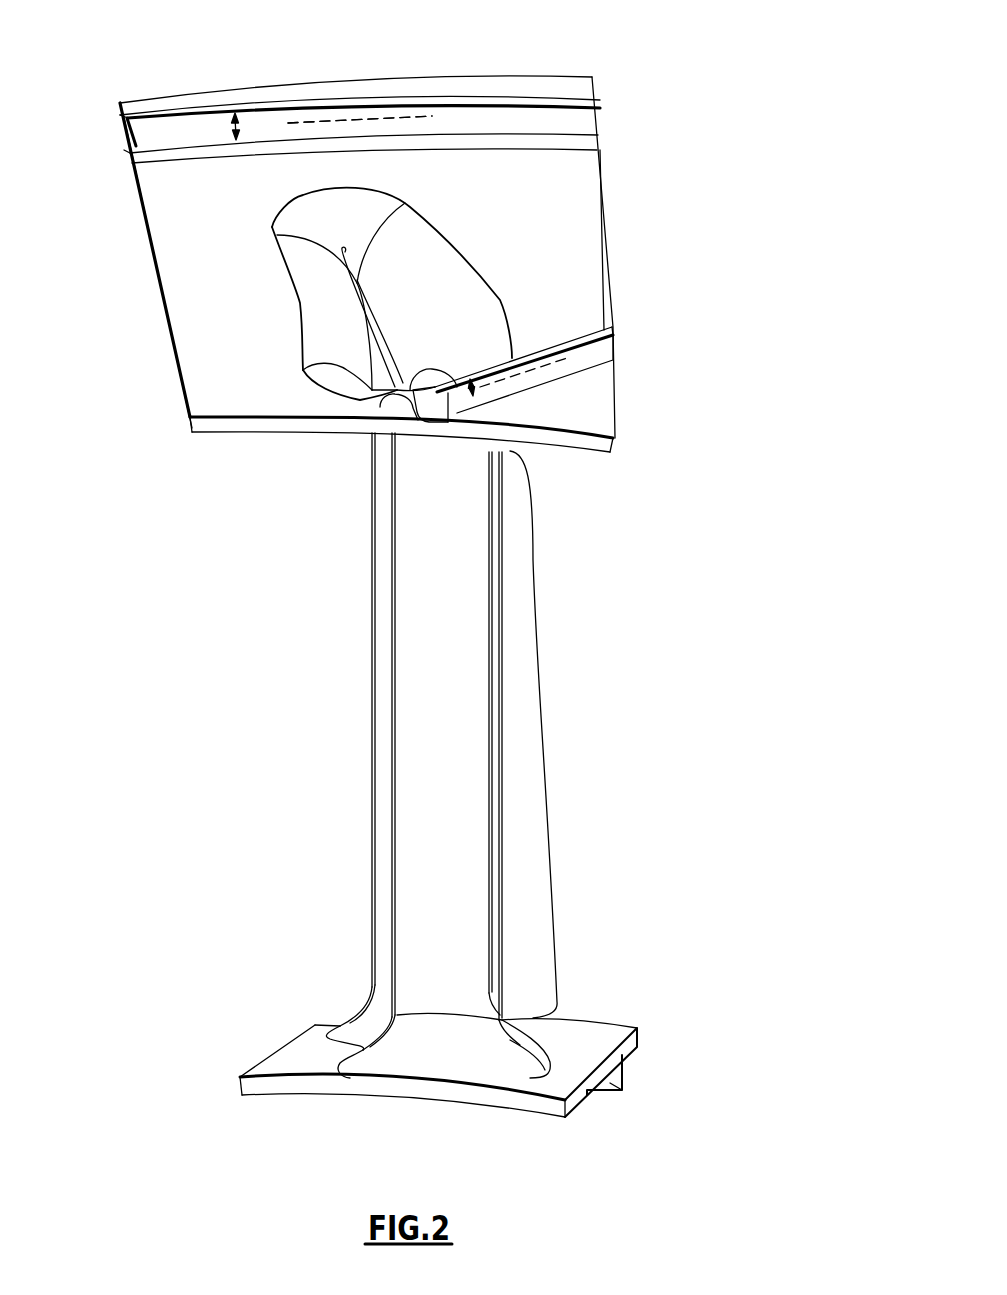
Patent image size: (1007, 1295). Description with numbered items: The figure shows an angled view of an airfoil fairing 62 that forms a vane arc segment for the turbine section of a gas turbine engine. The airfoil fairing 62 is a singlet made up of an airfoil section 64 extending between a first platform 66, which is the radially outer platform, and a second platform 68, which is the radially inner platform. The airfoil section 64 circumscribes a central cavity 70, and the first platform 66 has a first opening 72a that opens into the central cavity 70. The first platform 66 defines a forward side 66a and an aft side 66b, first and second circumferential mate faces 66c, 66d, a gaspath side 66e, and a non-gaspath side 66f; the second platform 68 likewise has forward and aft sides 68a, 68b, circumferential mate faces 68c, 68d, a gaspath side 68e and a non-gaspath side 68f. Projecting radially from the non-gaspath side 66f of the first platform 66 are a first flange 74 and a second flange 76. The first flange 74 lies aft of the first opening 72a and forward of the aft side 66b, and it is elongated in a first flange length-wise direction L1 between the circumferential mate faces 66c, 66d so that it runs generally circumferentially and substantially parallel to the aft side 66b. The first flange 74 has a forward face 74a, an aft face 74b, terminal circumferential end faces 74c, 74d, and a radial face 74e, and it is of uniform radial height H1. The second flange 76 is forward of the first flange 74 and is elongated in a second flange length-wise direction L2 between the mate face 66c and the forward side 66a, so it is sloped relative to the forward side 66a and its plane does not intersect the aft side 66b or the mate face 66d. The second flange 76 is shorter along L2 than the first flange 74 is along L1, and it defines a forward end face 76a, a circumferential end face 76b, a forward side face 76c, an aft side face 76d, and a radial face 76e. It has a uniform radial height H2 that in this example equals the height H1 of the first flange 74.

The airfoil fairing 62 is at (182, 812).
The airfoil section 64 is at (540, 735).
The first platform 66 is at (391, 272).
The forward side 66a is at (223, 425).
The aft side 66b is at (575, 75).
The first circumferential mate face 66c is at (610, 307).
The second circumferential mate face 66d is at (174, 355).
The gaspath side 66e is at (592, 455).
The non-gaspath side 66f is at (570, 190).
The second platform 68 is at (444, 1066).
The radially inner side of inner platform 68a is at (512, 1100).
The radially outer side of inner platform 68b is at (567, 1020).
The downstream side of inner platform 68c is at (630, 1055).
The upstream side of inner platform 68d is at (265, 1062).
The circumferential side of inner platform 68e is at (567, 1075).
The circumferential side of inner platform 68f is at (363, 1093).
The central cavity 70 is at (408, 355).
The first opening 72a is at (440, 275).
The first flange 74 is at (357, 101).
The forward face 74a is at (500, 112).
The aft face 74b is at (497, 97).
The terminal circumferential end face 74c is at (600, 120).
The terminal circumferential end face 74d is at (120, 133).
The radial face 74e is at (428, 100).
The second flange 76 is at (493, 397).
The forward end face 76a is at (392, 420).
The circumferential end face 76b is at (613, 340).
The forward side face 76c is at (448, 397).
The aft side face 76d is at (525, 353).
The radial face 76e is at (392, 395).
The radial height of first flange H1 is at (247, 122).
The radial height of second flange H2 is at (460, 423).
The first flange length-wise direction L1 is at (360, 118).
The second flange length-wise direction L2 is at (568, 362).